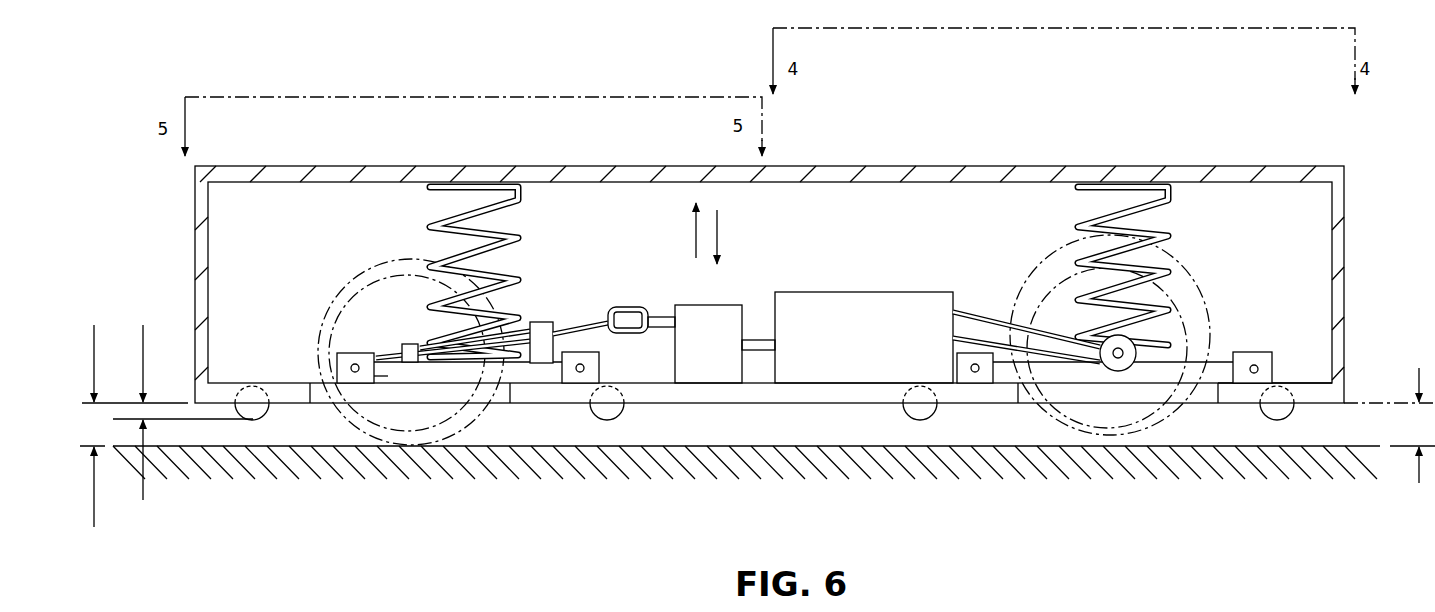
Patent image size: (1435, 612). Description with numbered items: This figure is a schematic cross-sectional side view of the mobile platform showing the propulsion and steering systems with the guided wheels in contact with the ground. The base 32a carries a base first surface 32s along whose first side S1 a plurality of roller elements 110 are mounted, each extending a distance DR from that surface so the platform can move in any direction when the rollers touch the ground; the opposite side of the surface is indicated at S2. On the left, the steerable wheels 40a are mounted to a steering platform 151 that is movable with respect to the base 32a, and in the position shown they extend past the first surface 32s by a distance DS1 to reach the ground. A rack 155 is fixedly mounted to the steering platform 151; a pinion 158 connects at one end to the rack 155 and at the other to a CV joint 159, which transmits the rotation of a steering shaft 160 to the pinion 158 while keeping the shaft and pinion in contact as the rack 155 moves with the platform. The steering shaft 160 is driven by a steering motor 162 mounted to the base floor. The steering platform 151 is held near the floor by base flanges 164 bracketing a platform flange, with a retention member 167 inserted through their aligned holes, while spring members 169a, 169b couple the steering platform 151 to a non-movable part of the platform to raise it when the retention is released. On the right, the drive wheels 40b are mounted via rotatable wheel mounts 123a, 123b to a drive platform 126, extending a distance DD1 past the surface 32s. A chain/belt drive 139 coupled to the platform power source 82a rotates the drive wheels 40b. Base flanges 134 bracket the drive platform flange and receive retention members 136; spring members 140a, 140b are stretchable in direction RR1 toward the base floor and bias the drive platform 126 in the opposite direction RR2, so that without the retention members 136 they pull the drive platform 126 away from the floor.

The base first surface 32s is at (525, 403).
The base 32a is at (1237, 393).
The roller elements 110 is at (250, 421).
The steerable wheels 40a is at (390, 433).
The drive wheels 40b is at (1138, 433).
The spring member 169a is at (382, 272).
The spring member 169b is at (430, 220).
The spring member 140a is at (1135, 208).
The spring member 140b is at (1108, 183).
The rack 155 is at (540, 363).
The rotatable wheel mount 123a is at (443, 452).
The rotatable wheel mount 123b is at (405, 362).
The retention member 167 is at (372, 378).
The steering platform 151 is at (351, 366).
The pinion 158 is at (578, 325).
The base flanges 164 is at (343, 385).
The CV joint 159 is at (625, 307).
The steering shaft 160 is at (660, 317).
The steering motor 162 is at (725, 344).
The platform power source 82a is at (868, 292).
The chain/belt drive 139 is at (1012, 345).
The drive platform 126 is at (1163, 373).
The base flanges 134 is at (968, 383).
The retention members 136 is at (975, 364).
The first side of the first surface S1 is at (757, 448).
The body bottom surface S2 is at (1389, 370).
The roller element extension distance DR is at (146, 343).
The first steerable wheel distance DS1 is at (95, 493).
The first drive wheel distance DD1 is at (1419, 470).
The spring stretching direction RR1 is at (739, 237).
The drive platform bias direction RR2 is at (675, 230).